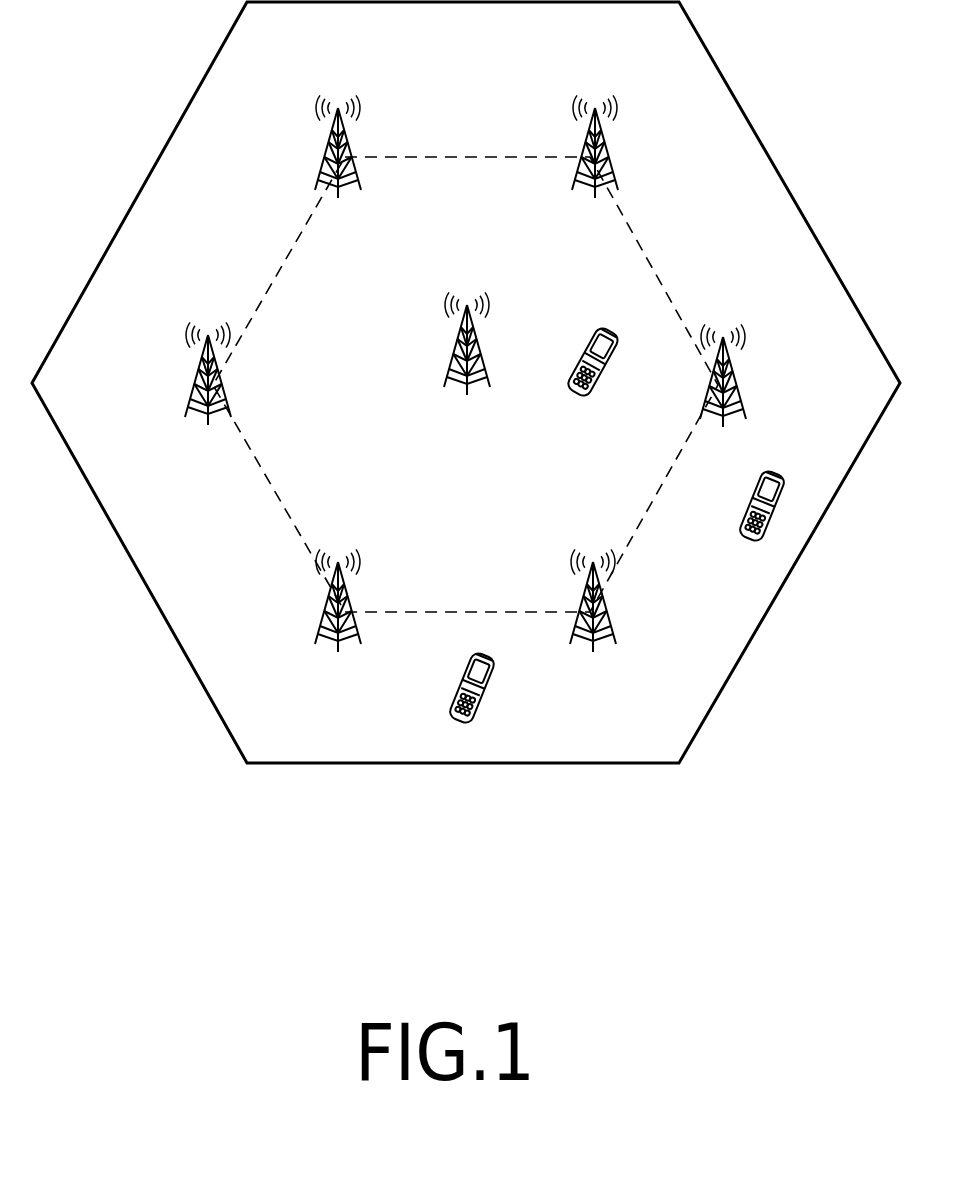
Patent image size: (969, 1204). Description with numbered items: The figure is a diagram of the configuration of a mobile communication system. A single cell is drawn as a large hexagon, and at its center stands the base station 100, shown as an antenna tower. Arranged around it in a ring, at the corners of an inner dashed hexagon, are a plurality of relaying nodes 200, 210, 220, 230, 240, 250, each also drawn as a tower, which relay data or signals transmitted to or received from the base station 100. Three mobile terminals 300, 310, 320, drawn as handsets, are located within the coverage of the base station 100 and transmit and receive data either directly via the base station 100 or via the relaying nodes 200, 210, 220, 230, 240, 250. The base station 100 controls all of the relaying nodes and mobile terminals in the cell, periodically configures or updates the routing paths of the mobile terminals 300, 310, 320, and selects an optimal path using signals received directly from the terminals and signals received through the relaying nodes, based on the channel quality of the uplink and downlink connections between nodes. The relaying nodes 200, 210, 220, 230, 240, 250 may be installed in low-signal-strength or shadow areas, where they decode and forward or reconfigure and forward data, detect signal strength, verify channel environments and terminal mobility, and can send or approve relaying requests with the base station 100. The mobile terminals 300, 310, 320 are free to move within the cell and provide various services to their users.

The base station 100 is at (453, 342).
The relaying node 200 is at (610, 142).
The relaying node 210 is at (325, 142).
The relaying node 220 is at (198, 370).
The relaying node 230 is at (325, 612).
The relaying node 240 is at (605, 612).
The relaying node 250 is at (735, 372).
The mobile terminal 300 is at (750, 512).
The mobile terminal 310 is at (590, 395).
The mobile terminal 320 is at (490, 700).